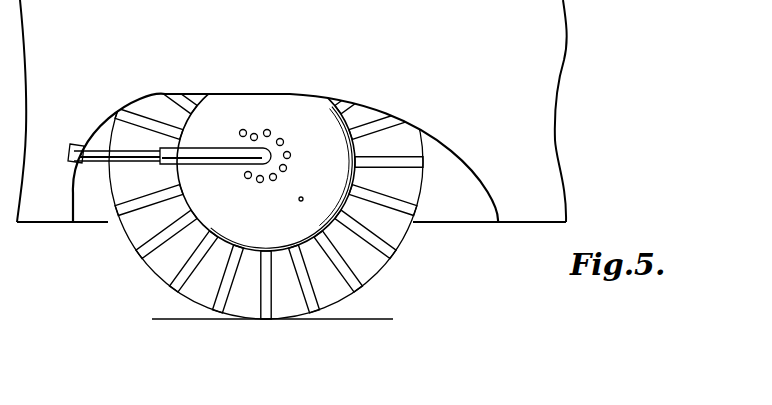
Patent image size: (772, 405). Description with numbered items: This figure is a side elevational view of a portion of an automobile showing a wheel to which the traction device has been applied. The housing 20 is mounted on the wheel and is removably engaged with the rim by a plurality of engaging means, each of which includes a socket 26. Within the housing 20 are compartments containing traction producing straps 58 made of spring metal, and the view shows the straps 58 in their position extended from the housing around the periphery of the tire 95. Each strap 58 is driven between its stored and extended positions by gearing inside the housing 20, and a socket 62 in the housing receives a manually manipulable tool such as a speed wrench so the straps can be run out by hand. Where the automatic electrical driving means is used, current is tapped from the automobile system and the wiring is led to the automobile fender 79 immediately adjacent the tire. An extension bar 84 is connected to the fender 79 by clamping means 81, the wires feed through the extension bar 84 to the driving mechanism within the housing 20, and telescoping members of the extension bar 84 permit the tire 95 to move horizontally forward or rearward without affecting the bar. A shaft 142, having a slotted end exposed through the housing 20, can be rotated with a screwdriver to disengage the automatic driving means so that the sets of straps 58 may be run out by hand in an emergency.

The automobile fender 79 is at (558, 46).
The clamping means 81 is at (68, 153).
The extension bar 84 is at (213, 171).
The socket 26 is at (244, 130).
The socket 62 is at (259, 183).
The shaft 142 is at (299, 201).
The housing 20 is at (366, 177).
The traction producing strap 58 is at (137, 255).
The tire 95 is at (372, 272).